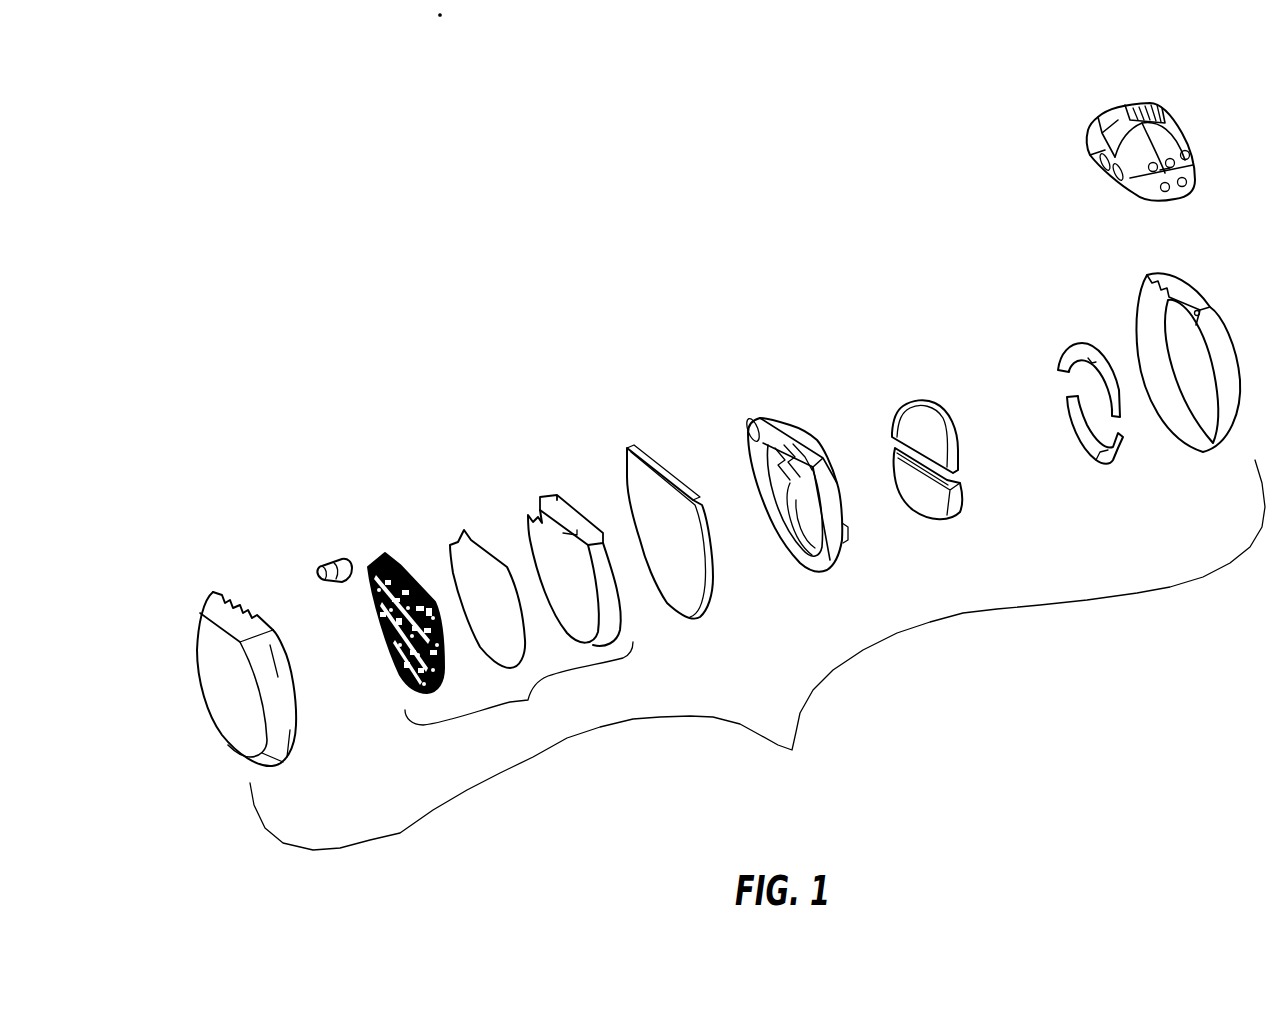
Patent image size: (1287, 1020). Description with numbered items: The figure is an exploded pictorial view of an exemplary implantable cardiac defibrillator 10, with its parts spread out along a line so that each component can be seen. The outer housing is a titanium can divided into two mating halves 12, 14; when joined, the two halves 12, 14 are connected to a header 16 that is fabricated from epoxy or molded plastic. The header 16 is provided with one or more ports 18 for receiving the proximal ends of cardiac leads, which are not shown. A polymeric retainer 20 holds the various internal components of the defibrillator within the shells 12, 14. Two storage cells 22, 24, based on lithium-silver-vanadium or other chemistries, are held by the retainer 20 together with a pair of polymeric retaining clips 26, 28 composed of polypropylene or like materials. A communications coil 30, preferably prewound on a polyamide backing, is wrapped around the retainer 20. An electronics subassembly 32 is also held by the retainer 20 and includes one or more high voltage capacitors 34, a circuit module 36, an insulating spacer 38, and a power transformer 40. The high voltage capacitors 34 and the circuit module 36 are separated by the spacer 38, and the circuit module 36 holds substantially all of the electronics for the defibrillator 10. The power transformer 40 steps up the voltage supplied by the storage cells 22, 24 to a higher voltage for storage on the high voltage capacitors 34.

The cardiac defibrillator 10 is at (757, 655).
The can half 12 is at (213, 652).
The can half 14 is at (1225, 348).
The header 16 is at (1133, 106).
The ports 18 is at (1173, 137).
The polymeric retainer 20 is at (778, 427).
The storage cell 22 is at (915, 395).
The storage cell 24 is at (963, 517).
The polymeric retaining clip 26 is at (1073, 342).
The polymeric retaining clip 28 is at (1123, 457).
The communications coil 30 is at (625, 447).
The electronics subassembly 32 is at (519, 692).
The high voltage capacitor 34 is at (538, 510).
The circuit module 36 is at (380, 557).
The insulating spacer 38 is at (464, 532).
The power transformer 40 is at (337, 560).